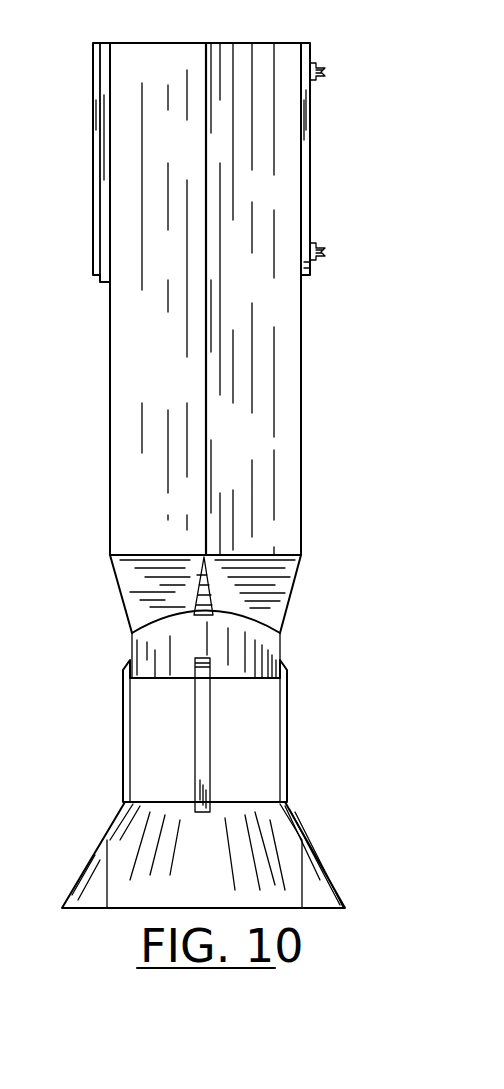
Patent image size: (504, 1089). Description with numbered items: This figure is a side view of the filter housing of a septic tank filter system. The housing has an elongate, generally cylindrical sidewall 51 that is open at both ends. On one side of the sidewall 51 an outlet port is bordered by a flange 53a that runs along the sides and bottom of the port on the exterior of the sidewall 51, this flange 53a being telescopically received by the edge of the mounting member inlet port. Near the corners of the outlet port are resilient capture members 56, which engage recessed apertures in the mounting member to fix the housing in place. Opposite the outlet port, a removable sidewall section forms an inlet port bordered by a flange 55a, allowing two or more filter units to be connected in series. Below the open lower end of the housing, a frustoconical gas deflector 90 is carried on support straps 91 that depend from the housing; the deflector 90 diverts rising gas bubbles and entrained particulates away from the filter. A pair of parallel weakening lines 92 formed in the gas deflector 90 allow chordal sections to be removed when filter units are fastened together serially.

The sidewall 51 is at (240, 340).
The flange 53a is at (308, 200).
The flange 55a is at (102, 195).
The resilient capture member 56 is at (320, 64).
The gas deflector 90 is at (317, 887).
The support strap 91 is at (287, 762).
The weakening line 92 is at (303, 857).